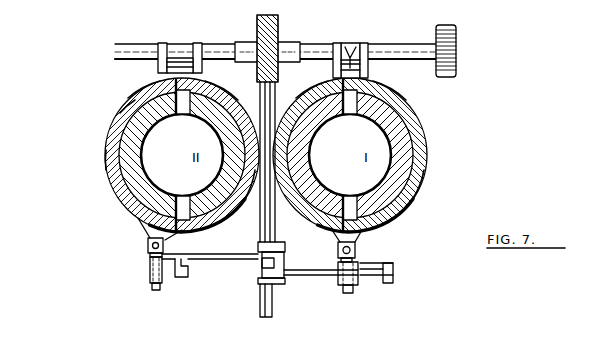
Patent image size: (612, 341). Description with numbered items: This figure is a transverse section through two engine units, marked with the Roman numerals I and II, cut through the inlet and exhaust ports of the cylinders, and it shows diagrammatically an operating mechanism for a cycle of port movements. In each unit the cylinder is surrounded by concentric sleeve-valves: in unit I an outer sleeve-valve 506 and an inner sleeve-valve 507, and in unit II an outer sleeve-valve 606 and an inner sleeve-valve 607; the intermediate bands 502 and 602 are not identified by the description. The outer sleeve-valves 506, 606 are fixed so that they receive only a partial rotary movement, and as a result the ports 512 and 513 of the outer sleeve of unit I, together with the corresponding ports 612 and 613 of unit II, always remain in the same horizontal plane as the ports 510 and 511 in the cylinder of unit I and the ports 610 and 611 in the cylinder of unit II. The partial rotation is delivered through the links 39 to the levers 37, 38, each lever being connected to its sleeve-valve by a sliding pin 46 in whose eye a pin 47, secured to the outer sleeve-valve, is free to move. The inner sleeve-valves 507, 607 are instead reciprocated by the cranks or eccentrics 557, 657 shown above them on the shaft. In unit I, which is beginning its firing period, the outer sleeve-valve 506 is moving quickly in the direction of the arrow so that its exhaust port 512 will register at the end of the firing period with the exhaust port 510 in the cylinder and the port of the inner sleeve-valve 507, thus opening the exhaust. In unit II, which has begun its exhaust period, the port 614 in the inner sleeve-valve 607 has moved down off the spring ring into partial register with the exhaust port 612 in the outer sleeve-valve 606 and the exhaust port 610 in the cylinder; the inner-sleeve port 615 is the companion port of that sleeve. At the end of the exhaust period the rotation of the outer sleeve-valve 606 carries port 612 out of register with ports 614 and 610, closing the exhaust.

The crank or eccentric 657 is at (179, 58).
The crank or eccentric 557 is at (347, 47).
The ring segment 613 is at (152, 88).
The port in outer sleeve 513 is at (327, 88).
The ring segment 615 is at (130, 115).
The outer sleeve-valve 606 is at (112, 125).
The outer sleeve-valve 506 is at (420, 128).
The hub ring 602 is at (128, 148).
The hub ring 502 is at (403, 152).
The inner sleeve-valve 607 is at (113, 160).
The inner sleeve-valve 507 is at (424, 175).
The exhaust port in outer sleeve-valve 612 is at (117, 203).
The exhaust port in outer sleeve-valve 512 is at (337, 233).
The bore 611 is at (214, 124).
The port in cylinder 511 is at (381, 127).
The exhaust port in cylinder 610 is at (220, 183).
The exhaust port in cylinder 510 is at (388, 185).
The port in inner sleeve-valve 614 is at (242, 212).
The pin 47 is at (147, 252).
The sliding pin 46 is at (153, 289).
The lever 38 is at (176, 278).
The link 39 is at (213, 260).
The lever 37 is at (366, 284).